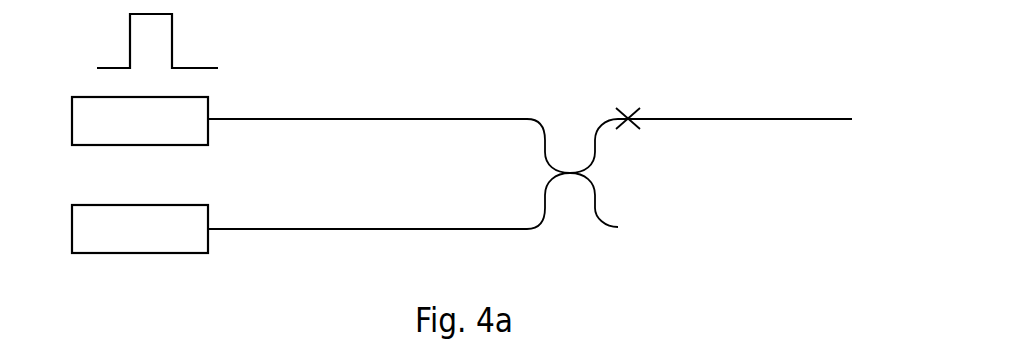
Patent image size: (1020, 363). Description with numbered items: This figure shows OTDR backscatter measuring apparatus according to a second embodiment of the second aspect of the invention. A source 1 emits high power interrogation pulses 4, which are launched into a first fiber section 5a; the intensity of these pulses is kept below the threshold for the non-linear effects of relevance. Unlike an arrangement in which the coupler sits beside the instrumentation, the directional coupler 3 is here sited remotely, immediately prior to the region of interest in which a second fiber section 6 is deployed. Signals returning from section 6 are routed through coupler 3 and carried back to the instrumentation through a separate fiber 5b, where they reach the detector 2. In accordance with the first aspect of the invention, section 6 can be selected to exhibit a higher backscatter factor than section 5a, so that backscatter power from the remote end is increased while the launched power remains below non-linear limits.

The source 1 is at (147, 130).
The detector 2 is at (147, 238).
The directional coupler 3 is at (593, 158).
The interrogation pulses 4 is at (159, 54).
The first fiber section 5a is at (403, 118).
The separate fiber 5b is at (403, 228).
The second fiber section 6 is at (770, 118).